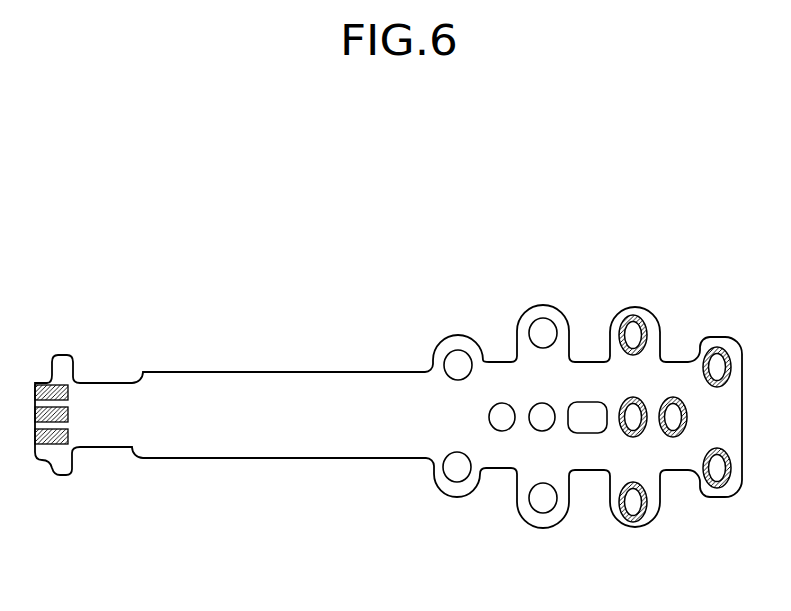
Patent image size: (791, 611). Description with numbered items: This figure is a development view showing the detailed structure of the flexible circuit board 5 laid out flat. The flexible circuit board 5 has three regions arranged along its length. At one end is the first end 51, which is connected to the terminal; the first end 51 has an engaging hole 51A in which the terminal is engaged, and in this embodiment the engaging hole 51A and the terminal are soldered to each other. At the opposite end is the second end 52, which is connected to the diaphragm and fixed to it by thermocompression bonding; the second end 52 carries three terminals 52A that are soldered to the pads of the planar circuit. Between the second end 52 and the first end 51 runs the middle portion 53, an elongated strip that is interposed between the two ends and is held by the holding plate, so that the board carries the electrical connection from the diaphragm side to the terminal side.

The flexible circuit board 5 is at (361, 294).
The first end 51 is at (663, 338).
The engaging hole 51A is at (639, 326).
The second end 52 is at (60, 368).
The terminal 52A is at (38, 410).
The middle portion 53 is at (288, 372).